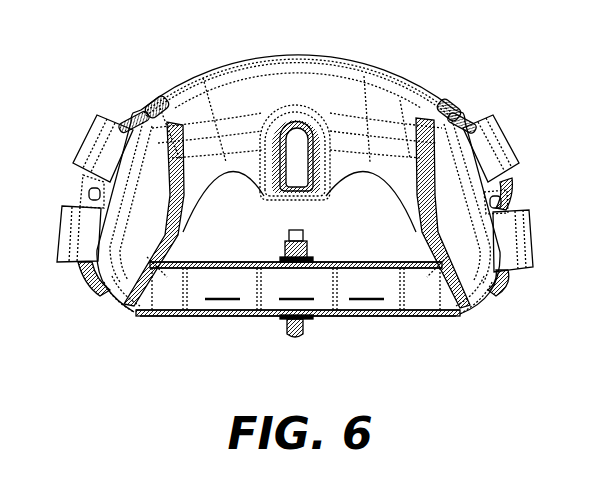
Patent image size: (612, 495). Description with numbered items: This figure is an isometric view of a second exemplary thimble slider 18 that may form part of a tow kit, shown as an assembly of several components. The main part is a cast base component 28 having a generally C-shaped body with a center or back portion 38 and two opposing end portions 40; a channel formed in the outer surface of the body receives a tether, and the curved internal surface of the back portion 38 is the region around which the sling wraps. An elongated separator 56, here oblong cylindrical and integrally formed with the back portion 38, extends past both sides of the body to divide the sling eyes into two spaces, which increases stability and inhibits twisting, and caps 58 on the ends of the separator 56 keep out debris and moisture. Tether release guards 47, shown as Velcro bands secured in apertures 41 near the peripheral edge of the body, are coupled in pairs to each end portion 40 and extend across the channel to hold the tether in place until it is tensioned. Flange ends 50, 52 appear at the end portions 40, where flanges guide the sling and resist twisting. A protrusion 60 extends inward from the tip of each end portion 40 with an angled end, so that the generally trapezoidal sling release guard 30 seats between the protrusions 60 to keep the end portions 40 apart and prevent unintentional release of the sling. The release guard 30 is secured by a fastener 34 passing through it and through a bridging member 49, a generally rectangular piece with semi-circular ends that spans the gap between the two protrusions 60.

The thimble slider 18 is at (463, 53).
The base component 28 is at (442, 357).
The sling release guard 30 is at (296, 285).
The fastener 34 is at (306, 340).
The back portion 38 is at (303, 68).
The end portion 40 is at (142, 190).
The apertures 41 is at (133, 128).
The tether release guard 47 is at (92, 148).
The bridging member 49 is at (247, 314).
The end of flange 50 is at (157, 106).
The end of flange 52 is at (128, 307).
The separator 56 is at (275, 168).
The caps 58 is at (298, 172).
The protrusion 60 is at (290, 285).